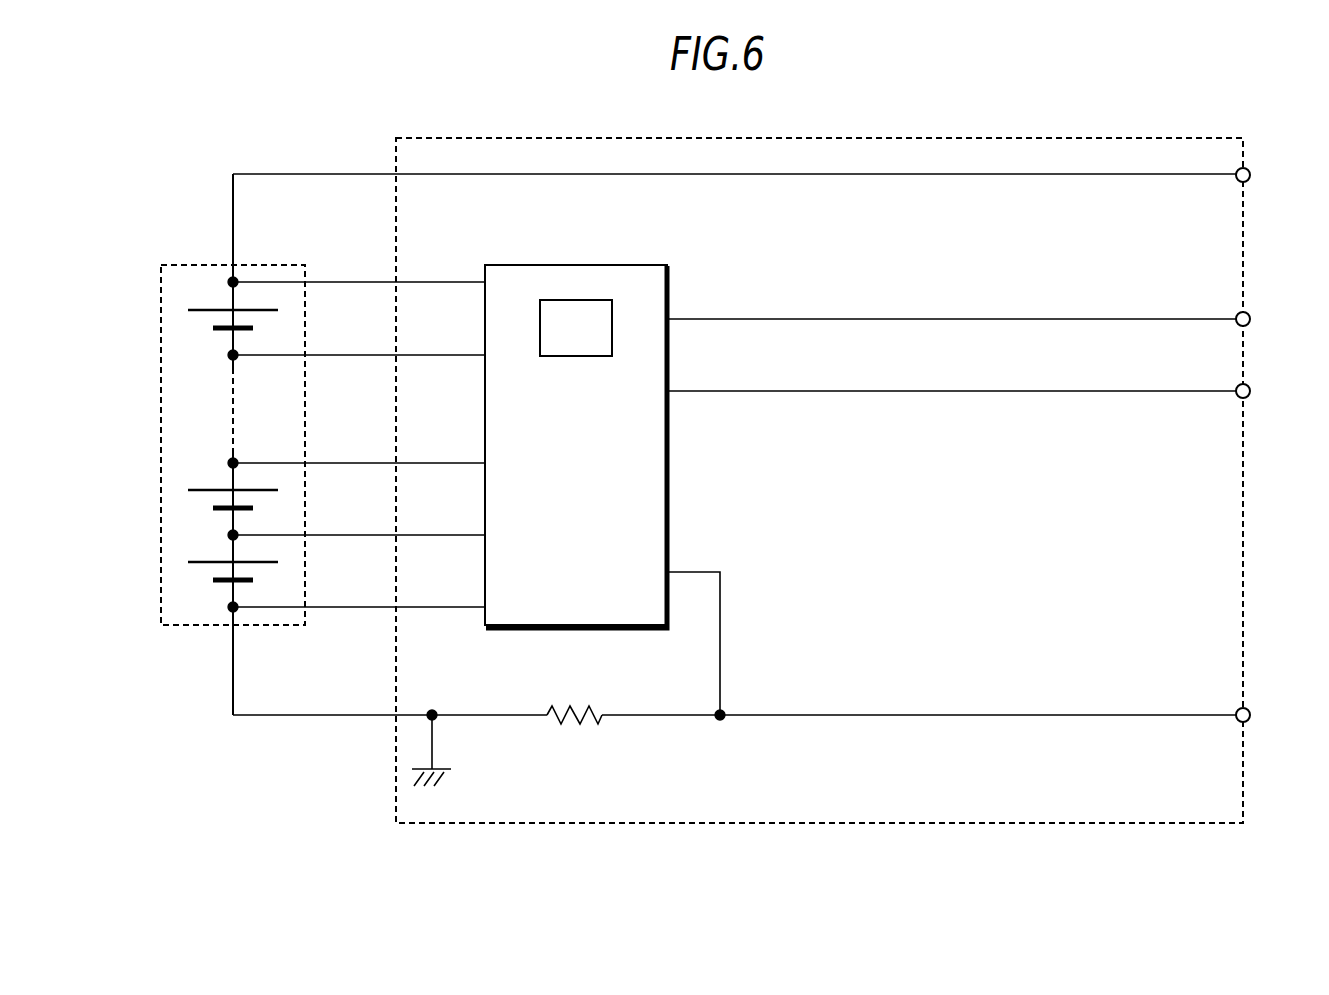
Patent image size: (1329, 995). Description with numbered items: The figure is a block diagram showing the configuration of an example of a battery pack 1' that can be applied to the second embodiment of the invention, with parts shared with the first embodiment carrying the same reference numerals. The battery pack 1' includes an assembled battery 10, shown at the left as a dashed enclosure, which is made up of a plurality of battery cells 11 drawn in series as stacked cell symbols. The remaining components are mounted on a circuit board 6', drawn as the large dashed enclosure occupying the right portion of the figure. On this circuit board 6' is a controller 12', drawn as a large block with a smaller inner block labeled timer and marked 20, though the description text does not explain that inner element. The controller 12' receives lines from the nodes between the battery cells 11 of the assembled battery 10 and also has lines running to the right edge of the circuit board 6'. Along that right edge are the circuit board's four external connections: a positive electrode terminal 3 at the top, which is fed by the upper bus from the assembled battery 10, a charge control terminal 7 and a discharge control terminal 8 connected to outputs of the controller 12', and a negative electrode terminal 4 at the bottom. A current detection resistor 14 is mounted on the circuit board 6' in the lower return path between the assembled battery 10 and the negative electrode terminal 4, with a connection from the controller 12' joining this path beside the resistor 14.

The battery pack 1' is at (709, 448).
The positive electrode terminal 3 is at (1249, 171).
The negative electrode terminal 4 is at (1249, 711).
The circuit board 6' is at (856, 480).
The charge control terminal 7 is at (1249, 315).
The discharge control terminal 8 is at (1249, 387).
The assembled battery 10 is at (267, 265).
The battery cell 11 is at (197, 319).
The controller 12' is at (621, 431).
The current detection resistor 14 is at (603, 717).
The timer 20 is at (580, 301).